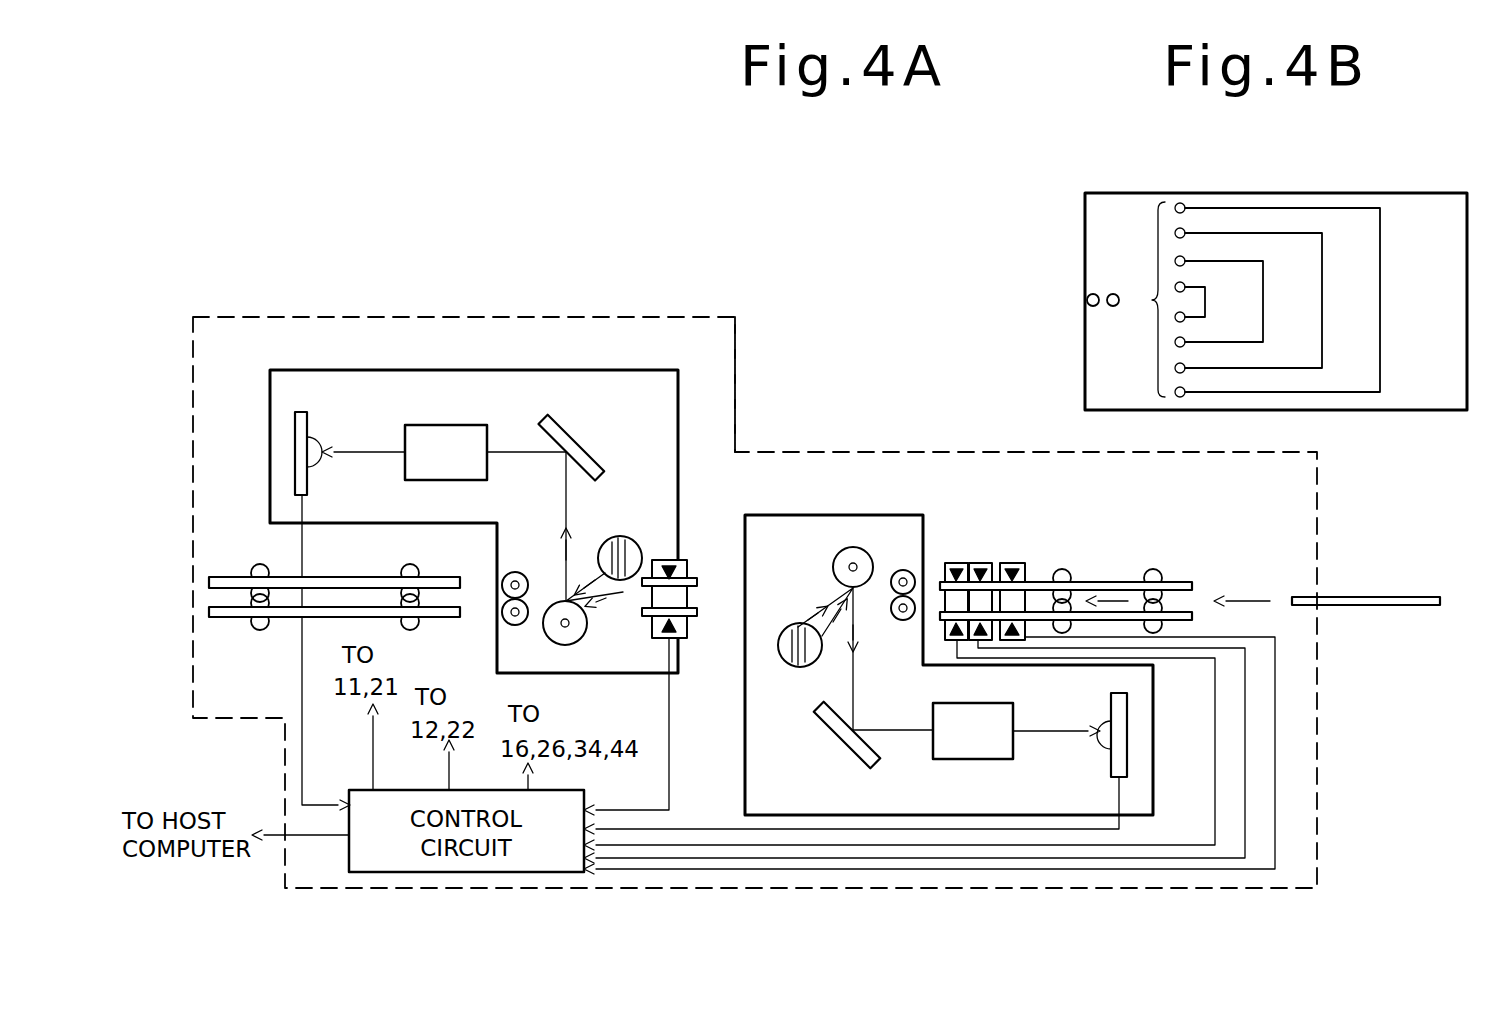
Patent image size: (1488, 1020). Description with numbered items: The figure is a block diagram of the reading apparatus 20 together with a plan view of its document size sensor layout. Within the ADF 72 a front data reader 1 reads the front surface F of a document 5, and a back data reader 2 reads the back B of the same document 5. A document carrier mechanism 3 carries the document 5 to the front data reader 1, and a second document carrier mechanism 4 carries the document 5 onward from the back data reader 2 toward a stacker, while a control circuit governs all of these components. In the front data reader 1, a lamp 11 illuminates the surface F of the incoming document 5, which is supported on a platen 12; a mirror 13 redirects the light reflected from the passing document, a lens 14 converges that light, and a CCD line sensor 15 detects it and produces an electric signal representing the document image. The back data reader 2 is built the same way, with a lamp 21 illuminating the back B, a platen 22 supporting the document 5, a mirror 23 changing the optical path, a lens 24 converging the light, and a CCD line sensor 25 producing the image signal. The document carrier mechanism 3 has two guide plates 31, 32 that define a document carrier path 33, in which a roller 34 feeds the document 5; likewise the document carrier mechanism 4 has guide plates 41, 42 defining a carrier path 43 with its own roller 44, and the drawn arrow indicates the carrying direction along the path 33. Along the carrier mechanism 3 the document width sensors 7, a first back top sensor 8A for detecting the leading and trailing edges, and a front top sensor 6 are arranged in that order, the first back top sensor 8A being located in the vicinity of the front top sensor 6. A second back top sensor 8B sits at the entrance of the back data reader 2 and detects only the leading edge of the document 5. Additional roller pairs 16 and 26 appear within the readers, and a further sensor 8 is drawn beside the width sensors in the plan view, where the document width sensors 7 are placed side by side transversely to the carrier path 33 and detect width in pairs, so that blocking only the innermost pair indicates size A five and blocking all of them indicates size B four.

In FIG. 4A, the front data reader 1 is at (818, 502).
In FIG. 4A, the back data reader 2 is at (528, 356).
In FIG. 4A, the document carrier mechanism 3 is at (941, 663).
In FIG. 4A, the document carrier mechanism 4 is at (333, 563).
In FIG. 4A, the document 5 is at (1430, 597).
In FIG. 4A, the front top sensor 6 is at (955, 562).
In FIG. 4B, the front top sensor 6 is at (1087, 296).
In FIG. 4A, the document width sensors 7 is at (1012, 562).
In FIG. 4B, the document width sensors 7 is at (1274, 299).
In FIG. 4B, the sensor 8 is at (1112, 293).
In FIG. 4A, the first back top sensor 8A is at (978, 562).
In FIG. 4A, the second back top sensor 8B is at (682, 560).
In FIG. 4A, the lamp 11 is at (786, 664).
In FIG. 4A, the platen 12 is at (833, 567).
In FIG. 4A, the mirror 13 is at (833, 758).
In FIG. 4A, the lens 14 is at (963, 760).
In FIG. 4A, the CCD line sensor 15 is at (1103, 750).
In FIG. 4A, the transport rollers 16 is at (902, 622).
In FIG. 4A, the reading apparatus 20 is at (556, 248).
In FIG. 4A, the lamp 21 is at (624, 536).
In FIG. 4A, the platen 22 is at (585, 636).
In FIG. 4A, the mirror 23 is at (590, 452).
In FIG. 4A, the lens 24 is at (470, 425).
In FIG. 4A, the CCD line sensor 25 is at (310, 448).
In FIG. 4A, the transport rollers 26 is at (518, 572).
In FIG. 4A, the guide plate 31 is at (1118, 582).
In FIG. 4B, the guide plate 31 is at (1276, 324).
In FIG. 4A, the guide plate 32 is at (1195, 612).
In FIG. 4B, the guide plate 32 is at (1410, 404).
In FIG. 4A, the document carrier path 33 is at (1037, 590).
In FIG. 4A, the roller 34 is at (1158, 575).
In FIG. 4A, the guide plate 41 is at (217, 577).
In FIG. 4A, the guide plate 42 is at (218, 618).
In FIG. 4A, the document carrier path 43 is at (350, 595).
In FIG. 4A, the roller 44 is at (420, 573).
In FIG. 4A, the ADF 72 is at (712, 316).
In FIG. 4A, the back of the document B is at (1350, 597).
In FIG. 4A, the surface of the document F is at (1375, 607).